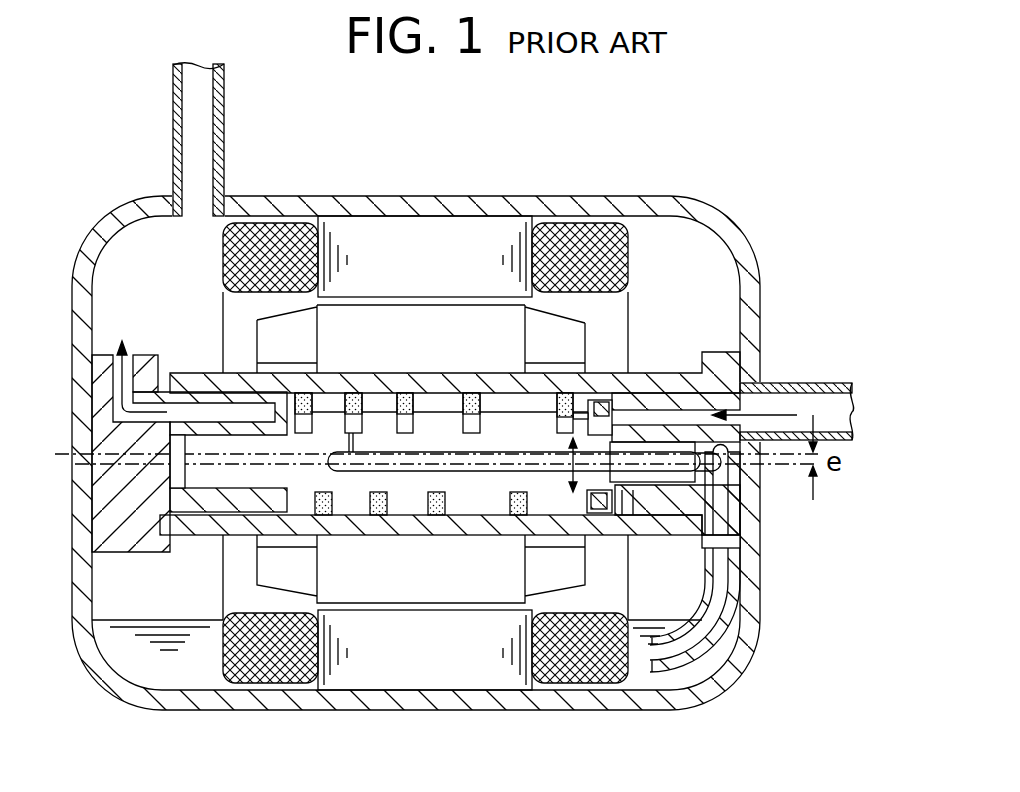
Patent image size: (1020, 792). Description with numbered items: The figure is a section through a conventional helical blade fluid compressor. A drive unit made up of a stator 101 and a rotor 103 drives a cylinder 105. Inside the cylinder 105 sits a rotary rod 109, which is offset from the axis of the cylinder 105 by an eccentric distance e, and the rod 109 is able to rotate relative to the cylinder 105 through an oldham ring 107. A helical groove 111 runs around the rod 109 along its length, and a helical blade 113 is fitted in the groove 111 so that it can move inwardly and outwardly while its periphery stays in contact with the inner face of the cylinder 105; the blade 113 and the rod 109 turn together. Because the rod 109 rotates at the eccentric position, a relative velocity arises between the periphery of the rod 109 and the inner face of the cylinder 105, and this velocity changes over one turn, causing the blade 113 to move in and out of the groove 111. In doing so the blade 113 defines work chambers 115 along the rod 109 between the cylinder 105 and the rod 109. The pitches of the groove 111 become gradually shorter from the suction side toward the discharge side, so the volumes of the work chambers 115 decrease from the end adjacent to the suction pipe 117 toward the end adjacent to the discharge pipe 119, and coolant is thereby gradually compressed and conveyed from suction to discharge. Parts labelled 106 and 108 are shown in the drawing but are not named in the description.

The stator 101 is at (447, 665).
The rotor 103 is at (447, 590).
The cylinder 105 is at (197, 378).
The bearing housing 106 is at (622, 394).
The oldham ring 107 is at (600, 398).
The thrust bearing 108 is at (608, 503).
The rotary rod 109 is at (205, 478).
The helical groove 111 is at (522, 392).
The helical blade 113 is at (382, 386).
The work chambers 115 is at (456, 386).
The suction pipe 117 is at (821, 390).
The discharge pipe 119 is at (204, 124).